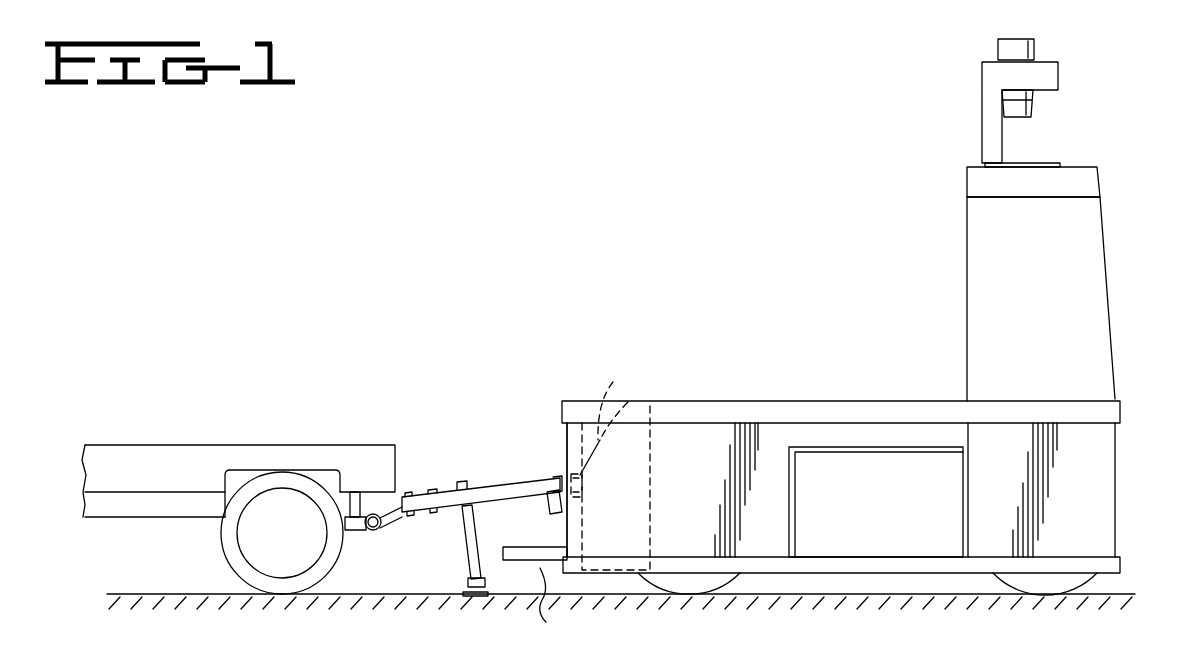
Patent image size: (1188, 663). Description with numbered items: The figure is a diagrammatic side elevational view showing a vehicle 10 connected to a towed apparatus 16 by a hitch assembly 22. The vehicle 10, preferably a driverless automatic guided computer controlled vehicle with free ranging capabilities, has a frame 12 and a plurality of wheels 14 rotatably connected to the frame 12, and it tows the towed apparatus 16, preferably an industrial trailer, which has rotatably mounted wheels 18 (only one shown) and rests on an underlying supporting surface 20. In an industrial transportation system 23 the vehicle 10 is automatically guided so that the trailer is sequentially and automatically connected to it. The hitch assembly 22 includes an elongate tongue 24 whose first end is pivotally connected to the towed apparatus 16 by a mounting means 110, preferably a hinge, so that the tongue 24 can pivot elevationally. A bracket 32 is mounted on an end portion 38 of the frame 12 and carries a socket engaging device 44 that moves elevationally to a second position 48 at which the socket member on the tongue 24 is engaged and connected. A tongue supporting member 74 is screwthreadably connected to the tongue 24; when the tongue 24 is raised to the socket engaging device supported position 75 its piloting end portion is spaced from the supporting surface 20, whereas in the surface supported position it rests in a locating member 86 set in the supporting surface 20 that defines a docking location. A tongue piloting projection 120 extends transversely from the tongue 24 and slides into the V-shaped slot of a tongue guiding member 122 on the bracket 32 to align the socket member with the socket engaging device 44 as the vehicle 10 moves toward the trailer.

The vehicle 10 is at (1112, 247).
The frame 12 is at (1108, 460).
The wheels 14 is at (687, 589).
The towed apparatus 16 is at (275, 432).
The wheels 18 is at (318, 576).
The underlying supporting surface 20 is at (185, 598).
The hitch assembly 22 is at (443, 376).
The industrial transportation system 23 is at (488, 138).
The tongue 24 is at (487, 485).
The bracket 32 is at (604, 415).
The end portion of the frame 38 is at (566, 441).
The socket engaging device 44 is at (563, 456).
The second position 48 is at (592, 482).
The tongue supporting member 74 is at (467, 553).
The socket engaging device supported position 75 is at (452, 583).
The locating member 86 is at (488, 593).
The mounting means 110 is at (376, 533).
The tongue piloting projection 120 is at (548, 508).
The tongue guiding member 122 is at (554, 610).